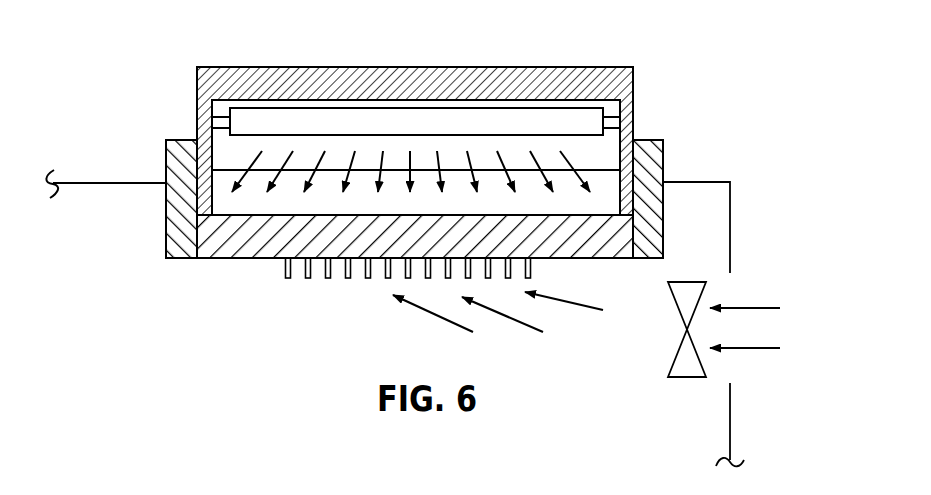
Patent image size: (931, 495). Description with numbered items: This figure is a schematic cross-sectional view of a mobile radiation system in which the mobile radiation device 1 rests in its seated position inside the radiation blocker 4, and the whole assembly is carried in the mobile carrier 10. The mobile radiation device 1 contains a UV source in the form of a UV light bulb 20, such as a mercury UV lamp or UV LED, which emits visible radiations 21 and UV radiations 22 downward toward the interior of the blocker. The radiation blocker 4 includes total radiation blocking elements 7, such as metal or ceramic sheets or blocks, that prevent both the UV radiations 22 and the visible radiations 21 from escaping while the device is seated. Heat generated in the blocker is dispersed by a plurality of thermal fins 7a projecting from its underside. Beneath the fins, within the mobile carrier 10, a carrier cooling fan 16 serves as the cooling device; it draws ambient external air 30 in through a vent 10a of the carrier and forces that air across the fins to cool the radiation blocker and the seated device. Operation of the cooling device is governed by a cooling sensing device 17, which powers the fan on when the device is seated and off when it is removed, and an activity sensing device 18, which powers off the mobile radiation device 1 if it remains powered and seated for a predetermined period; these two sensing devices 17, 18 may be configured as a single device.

The mobile radiation device 1 is at (275, 67).
The radiation blocker 4 is at (136, 131).
The total radiation blocking element 7 is at (166, 197).
The thermal fins 7a is at (288, 272).
The mobile carrier 10 is at (708, 182).
The vent 10a is at (740, 285).
The carrier cooling fan 16 is at (687, 377).
The cooling sensing device 17 is at (370, 258).
The activity sensing device 18 is at (197, 258).
The UV light bulb 20 is at (396, 118).
The visible radiations 21 is at (535, 160).
The UV radiations 22 is at (352, 152).
The ambient external air 30 is at (770, 308).